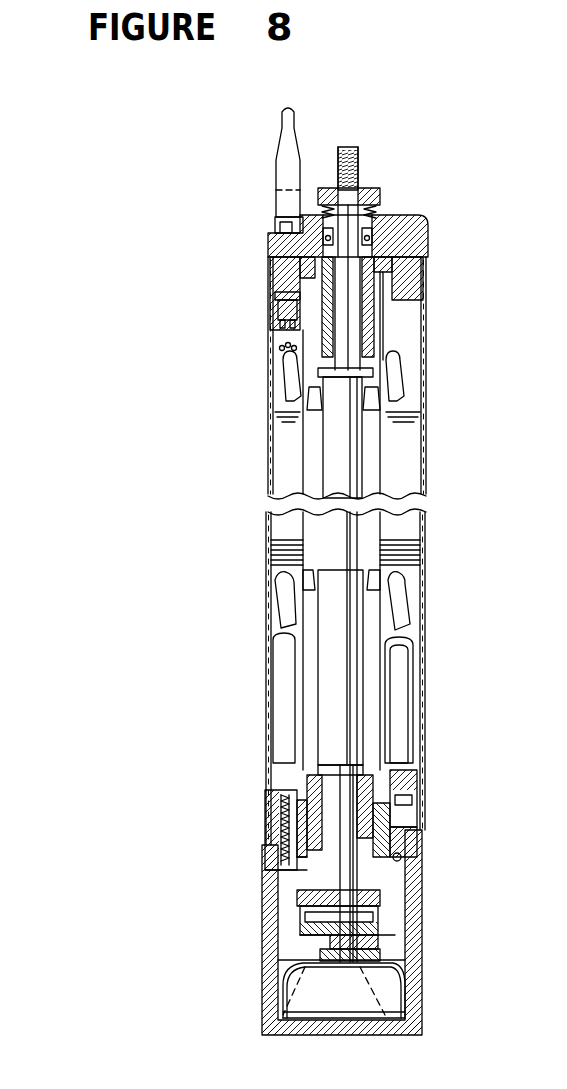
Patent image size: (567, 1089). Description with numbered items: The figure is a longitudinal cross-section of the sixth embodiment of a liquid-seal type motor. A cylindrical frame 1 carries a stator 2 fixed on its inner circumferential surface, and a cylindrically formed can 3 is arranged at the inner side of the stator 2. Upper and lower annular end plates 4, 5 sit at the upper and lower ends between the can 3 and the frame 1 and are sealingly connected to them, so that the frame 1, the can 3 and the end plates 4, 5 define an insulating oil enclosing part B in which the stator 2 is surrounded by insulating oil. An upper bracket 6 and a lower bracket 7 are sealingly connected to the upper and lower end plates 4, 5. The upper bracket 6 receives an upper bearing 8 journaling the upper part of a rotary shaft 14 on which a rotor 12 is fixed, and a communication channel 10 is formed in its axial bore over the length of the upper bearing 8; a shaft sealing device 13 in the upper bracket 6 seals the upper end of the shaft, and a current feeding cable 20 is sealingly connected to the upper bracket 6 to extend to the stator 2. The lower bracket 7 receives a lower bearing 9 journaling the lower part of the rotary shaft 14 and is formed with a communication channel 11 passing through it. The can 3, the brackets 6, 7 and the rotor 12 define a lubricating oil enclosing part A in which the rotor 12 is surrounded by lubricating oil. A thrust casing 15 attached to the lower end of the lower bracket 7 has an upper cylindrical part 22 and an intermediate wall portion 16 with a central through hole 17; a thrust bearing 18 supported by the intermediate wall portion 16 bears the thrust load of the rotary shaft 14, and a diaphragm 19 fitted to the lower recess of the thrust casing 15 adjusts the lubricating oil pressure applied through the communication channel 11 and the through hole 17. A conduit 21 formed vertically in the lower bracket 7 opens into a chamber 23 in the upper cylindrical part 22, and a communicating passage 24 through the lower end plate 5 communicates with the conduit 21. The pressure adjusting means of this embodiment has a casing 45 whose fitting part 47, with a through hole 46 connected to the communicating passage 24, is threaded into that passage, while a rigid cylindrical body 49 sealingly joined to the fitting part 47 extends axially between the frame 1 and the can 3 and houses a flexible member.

The cylindrical frame 1 is at (278, 535).
The stator 2 is at (280, 478).
The can 3 is at (320, 640).
The upper annular end plate 4 is at (282, 280).
The lower annular end plate 5 is at (278, 808).
The upper bracket 6 is at (275, 250).
The lower bracket 7 is at (278, 848).
The upper bearing 8 is at (380, 314).
The lower bearing 9 is at (400, 783).
The communication channel 10 is at (325, 314).
The communication channel 11 is at (322, 786).
The rotor 12 is at (320, 448).
The shaft sealing device 13 is at (416, 232).
The rotary shaft 14 is at (350, 466).
The thrust casing 15 is at (280, 882).
The intermediate wall portion 16 is at (295, 966).
The through hole 17 is at (395, 945).
The thrust bearing 18 is at (395, 932).
The diaphragm 19 is at (272, 988).
The current feeding cable 20 is at (288, 178).
The conduit 21 is at (410, 860).
The upper cylindrical part 22 is at (405, 915).
The chamber 23 is at (400, 888).
The communicating passage 24 is at (405, 815).
The casing 45 is at (410, 650).
The through hole 46 is at (395, 796).
The fitting part 47 is at (410, 766).
The rigid cylindrical body 49 is at (420, 690).
The lubricating oil enclosing part A is at (392, 380).
The insulating oil enclosing part B is at (276, 386).